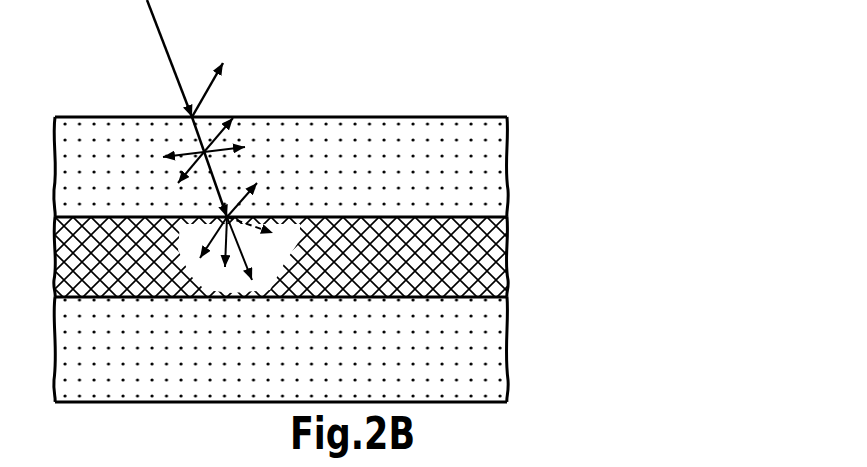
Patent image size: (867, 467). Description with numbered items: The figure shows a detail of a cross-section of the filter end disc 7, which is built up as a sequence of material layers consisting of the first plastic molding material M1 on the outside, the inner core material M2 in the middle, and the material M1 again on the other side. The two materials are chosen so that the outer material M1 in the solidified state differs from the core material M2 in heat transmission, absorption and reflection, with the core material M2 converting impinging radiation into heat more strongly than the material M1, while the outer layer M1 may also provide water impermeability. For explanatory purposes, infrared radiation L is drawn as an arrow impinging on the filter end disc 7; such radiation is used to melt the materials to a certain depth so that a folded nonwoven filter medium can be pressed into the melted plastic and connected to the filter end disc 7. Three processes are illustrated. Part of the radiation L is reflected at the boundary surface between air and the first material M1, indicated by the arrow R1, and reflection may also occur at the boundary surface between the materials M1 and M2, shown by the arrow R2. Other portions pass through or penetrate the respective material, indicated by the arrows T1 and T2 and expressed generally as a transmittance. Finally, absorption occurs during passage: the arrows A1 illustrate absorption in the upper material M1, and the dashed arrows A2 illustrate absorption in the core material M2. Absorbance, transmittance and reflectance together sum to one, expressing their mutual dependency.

The filter end disc 7 is at (329, 223).
The first plastic molding material M1 is at (472, 170).
The inner core material M2 is at (475, 257).
The infrared radiation L is at (155, 15).
The absorption arrows in upper material A1 is at (190, 148).
The reflection arrow at first boundary surface R1 is at (203, 98).
The transmission arrow in first material T1 is at (218, 205).
The reflection arrow at M1/M2 boundary R2 is at (233, 212).
The absorption arrows in core material A2 is at (222, 230).
The transmission arrow in second material T2 is at (236, 232).